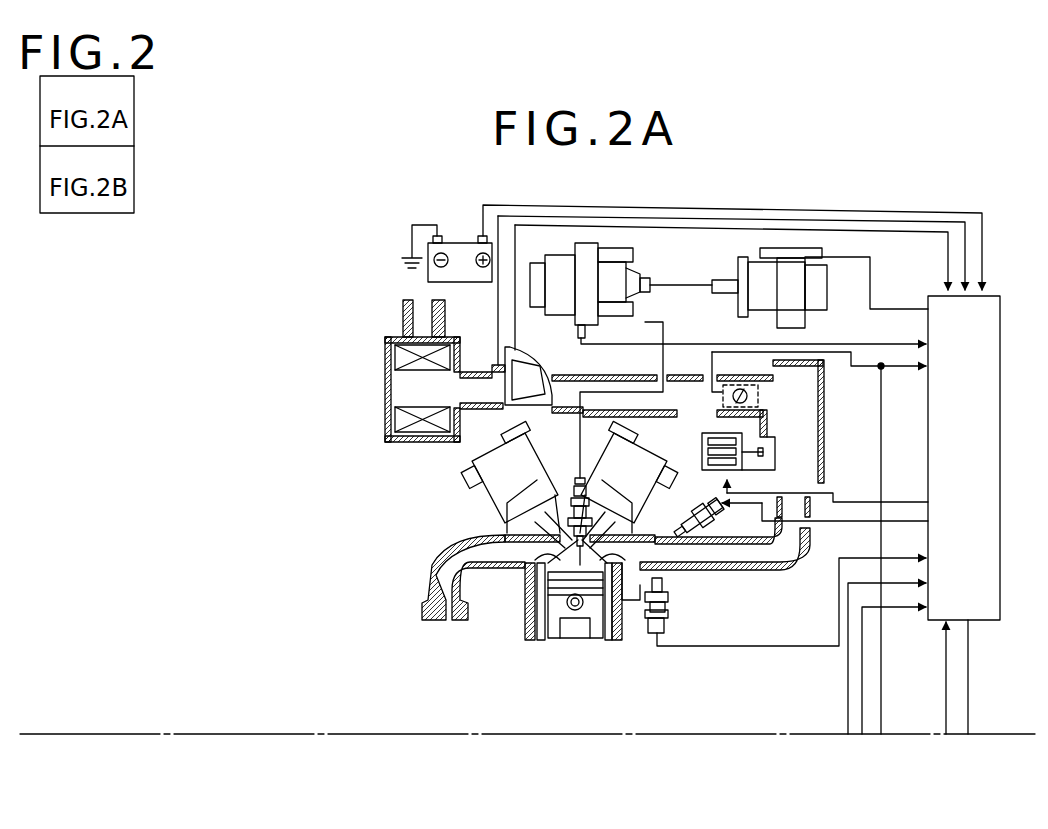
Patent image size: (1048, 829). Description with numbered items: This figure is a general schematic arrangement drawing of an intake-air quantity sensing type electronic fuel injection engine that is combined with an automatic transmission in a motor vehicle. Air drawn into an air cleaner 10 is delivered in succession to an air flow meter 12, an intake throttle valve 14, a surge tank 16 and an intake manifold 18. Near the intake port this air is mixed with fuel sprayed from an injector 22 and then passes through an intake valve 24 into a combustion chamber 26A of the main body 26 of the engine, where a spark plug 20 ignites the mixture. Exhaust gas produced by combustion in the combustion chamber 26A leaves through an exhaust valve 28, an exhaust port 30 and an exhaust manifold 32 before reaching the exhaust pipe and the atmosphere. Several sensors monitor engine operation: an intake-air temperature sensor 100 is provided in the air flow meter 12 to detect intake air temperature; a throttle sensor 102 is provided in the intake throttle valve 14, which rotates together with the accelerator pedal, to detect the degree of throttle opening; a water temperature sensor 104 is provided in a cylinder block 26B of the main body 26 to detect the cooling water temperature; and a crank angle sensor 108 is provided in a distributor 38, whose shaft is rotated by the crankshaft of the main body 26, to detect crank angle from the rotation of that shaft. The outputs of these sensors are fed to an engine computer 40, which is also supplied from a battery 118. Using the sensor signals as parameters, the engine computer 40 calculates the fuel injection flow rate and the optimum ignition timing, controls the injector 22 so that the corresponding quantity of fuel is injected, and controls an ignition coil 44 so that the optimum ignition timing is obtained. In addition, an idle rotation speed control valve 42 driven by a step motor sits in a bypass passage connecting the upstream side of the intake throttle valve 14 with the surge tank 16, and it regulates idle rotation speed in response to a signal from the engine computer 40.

The air cleaner 10 is at (385, 385).
The air flow meter 12 is at (528, 366).
The intake throttle valve 14 is at (759, 396).
The surge tank 16 is at (809, 441).
The intake manifold 18 is at (700, 557).
The spark plug 20 is at (631, 545).
The injector 22 is at (721, 511).
The intake valve 24 is at (630, 484).
The main body of the engine 26 is at (518, 636).
The combustion chamber 26A is at (538, 572).
The cylinder block 26B is at (622, 624).
The exhaust valve 28 is at (513, 484).
The exhaust port 30 is at (514, 552).
The exhaust manifold 32 is at (452, 568).
The distributor 38 is at (560, 266).
The engine computer 40 is at (1000, 482).
The idle rotation speed control valve 42 is at (705, 466).
The ignition coil 44 is at (814, 292).
The intake-air temperature sensor 100 is at (498, 384).
The throttle sensor 102 is at (722, 397).
The water temperature sensor 104 is at (668, 592).
The crank angle sensor 108 is at (578, 331).
The battery 118 is at (460, 253).